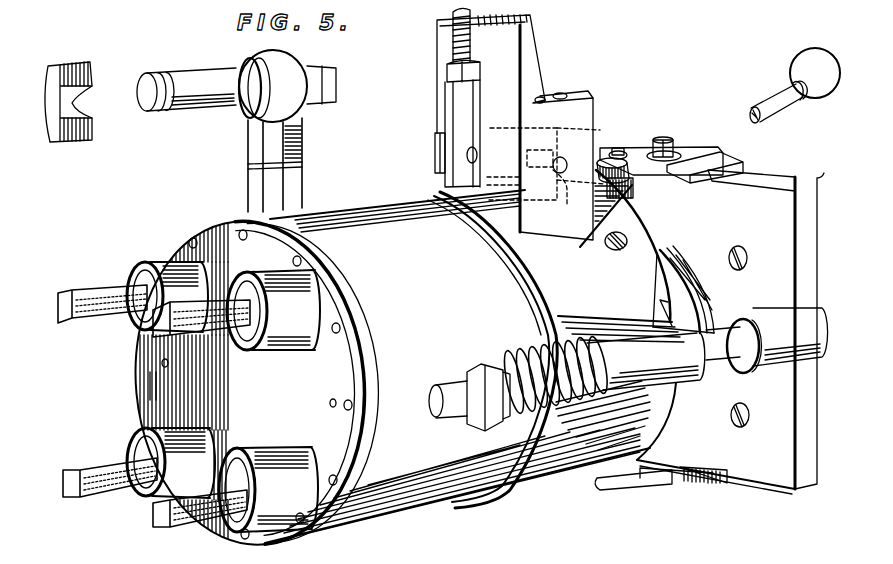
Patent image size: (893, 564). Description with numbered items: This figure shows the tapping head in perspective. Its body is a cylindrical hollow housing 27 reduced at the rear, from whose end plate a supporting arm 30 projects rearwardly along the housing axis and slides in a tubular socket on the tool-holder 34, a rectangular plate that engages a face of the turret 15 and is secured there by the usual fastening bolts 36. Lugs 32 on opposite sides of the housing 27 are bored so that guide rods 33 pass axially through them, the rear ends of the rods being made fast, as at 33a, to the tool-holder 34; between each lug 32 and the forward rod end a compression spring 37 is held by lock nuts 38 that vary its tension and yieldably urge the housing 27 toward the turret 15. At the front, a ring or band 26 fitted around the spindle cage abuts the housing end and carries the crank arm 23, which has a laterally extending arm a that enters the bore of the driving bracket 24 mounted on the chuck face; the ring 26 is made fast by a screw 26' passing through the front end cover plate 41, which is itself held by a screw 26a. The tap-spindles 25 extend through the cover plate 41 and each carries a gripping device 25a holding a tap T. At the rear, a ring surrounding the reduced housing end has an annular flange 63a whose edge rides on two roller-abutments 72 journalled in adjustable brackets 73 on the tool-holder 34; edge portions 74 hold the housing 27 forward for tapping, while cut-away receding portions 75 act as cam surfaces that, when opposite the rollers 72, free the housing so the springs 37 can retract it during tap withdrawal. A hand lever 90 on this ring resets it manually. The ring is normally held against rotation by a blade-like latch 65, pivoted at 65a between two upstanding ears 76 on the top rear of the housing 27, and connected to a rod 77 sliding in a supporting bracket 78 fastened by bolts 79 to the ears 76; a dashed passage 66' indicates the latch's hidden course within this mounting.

The driving bracket 24 is at (91, 68).
The laterally extending arm a is at (186, 76).
The crank arm 23 is at (300, 148).
The ring or band 26 is at (259, 383).
The screw 26' is at (305, 365).
The screw 26a is at (333, 403).
The front end cover plate 41 is at (155, 388).
The cylindrical hollow housing 27 is at (365, 213).
The tool receiving member or gripping device 25a is at (270, 460).
The tap-spindles 25 is at (310, 325).
The taps T is at (92, 322).
The lock nuts 38 is at (473, 420).
The compression spring 37 is at (525, 410).
The edge portions 74 is at (597, 230).
The upstanding ears 76 is at (587, 127).
The passage 66' is at (577, 182).
The pivot 65a is at (569, 149).
The supporting bracket 78 is at (537, 50).
The bolts 79 is at (560, 97).
The rod 77 is at (453, 33).
The latch 65 is at (437, 153).
The roller-abutments 72 is at (677, 183).
The adjustable brackets 73 is at (717, 128).
The annular flange or rim 63a is at (637, 237).
The cut-away or receding portions 75 is at (663, 280).
The supporting arm 30 is at (660, 303).
The lugs 32 is at (646, 361).
The guide rods 33 is at (732, 350).
The fastening of guide rods 33a is at (767, 307).
The fastening bolts 36 is at (740, 250).
The turret 15 is at (827, 483).
The tool-holder 34 is at (770, 467).
The hand lever 90 is at (777, 96).